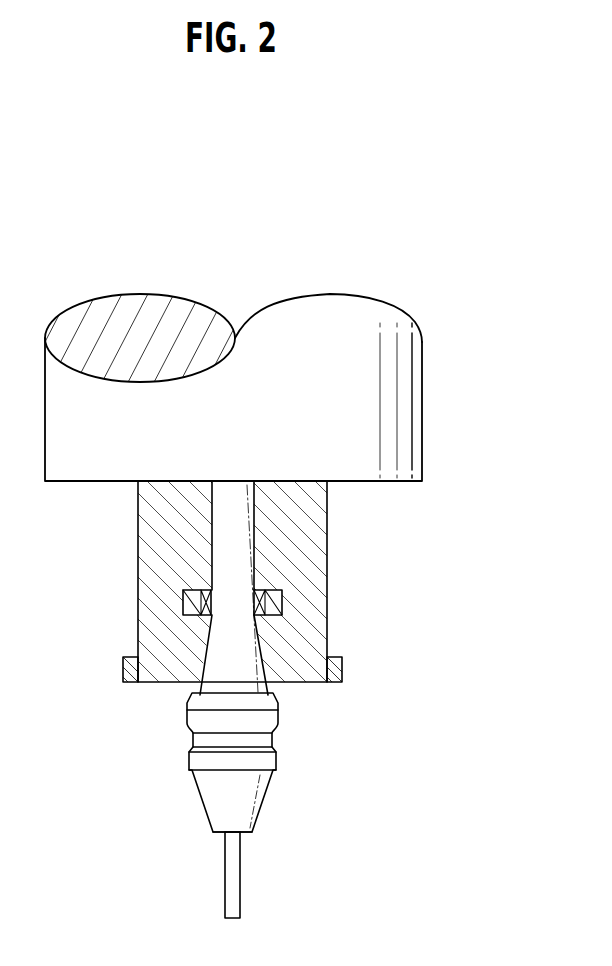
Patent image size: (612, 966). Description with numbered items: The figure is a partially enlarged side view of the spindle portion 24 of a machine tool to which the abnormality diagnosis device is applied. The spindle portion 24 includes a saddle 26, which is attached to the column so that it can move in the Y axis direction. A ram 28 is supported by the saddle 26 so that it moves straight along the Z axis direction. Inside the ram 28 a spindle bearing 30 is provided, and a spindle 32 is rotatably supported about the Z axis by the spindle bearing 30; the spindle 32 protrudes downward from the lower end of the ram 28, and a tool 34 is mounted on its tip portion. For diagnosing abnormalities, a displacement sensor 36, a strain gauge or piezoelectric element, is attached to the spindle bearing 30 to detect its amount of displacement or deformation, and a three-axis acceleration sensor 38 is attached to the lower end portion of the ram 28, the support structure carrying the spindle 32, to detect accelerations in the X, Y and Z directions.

The spindle portion 24 is at (363, 297).
The saddle 26 is at (404, 395).
The ram 28 is at (327, 503).
The spindle bearing 30 is at (260, 590).
The spindle 32 is at (238, 531).
The tool 34 is at (241, 804).
The displacement sensor 36 is at (192, 615).
The acceleration sensor 38 is at (123, 666).